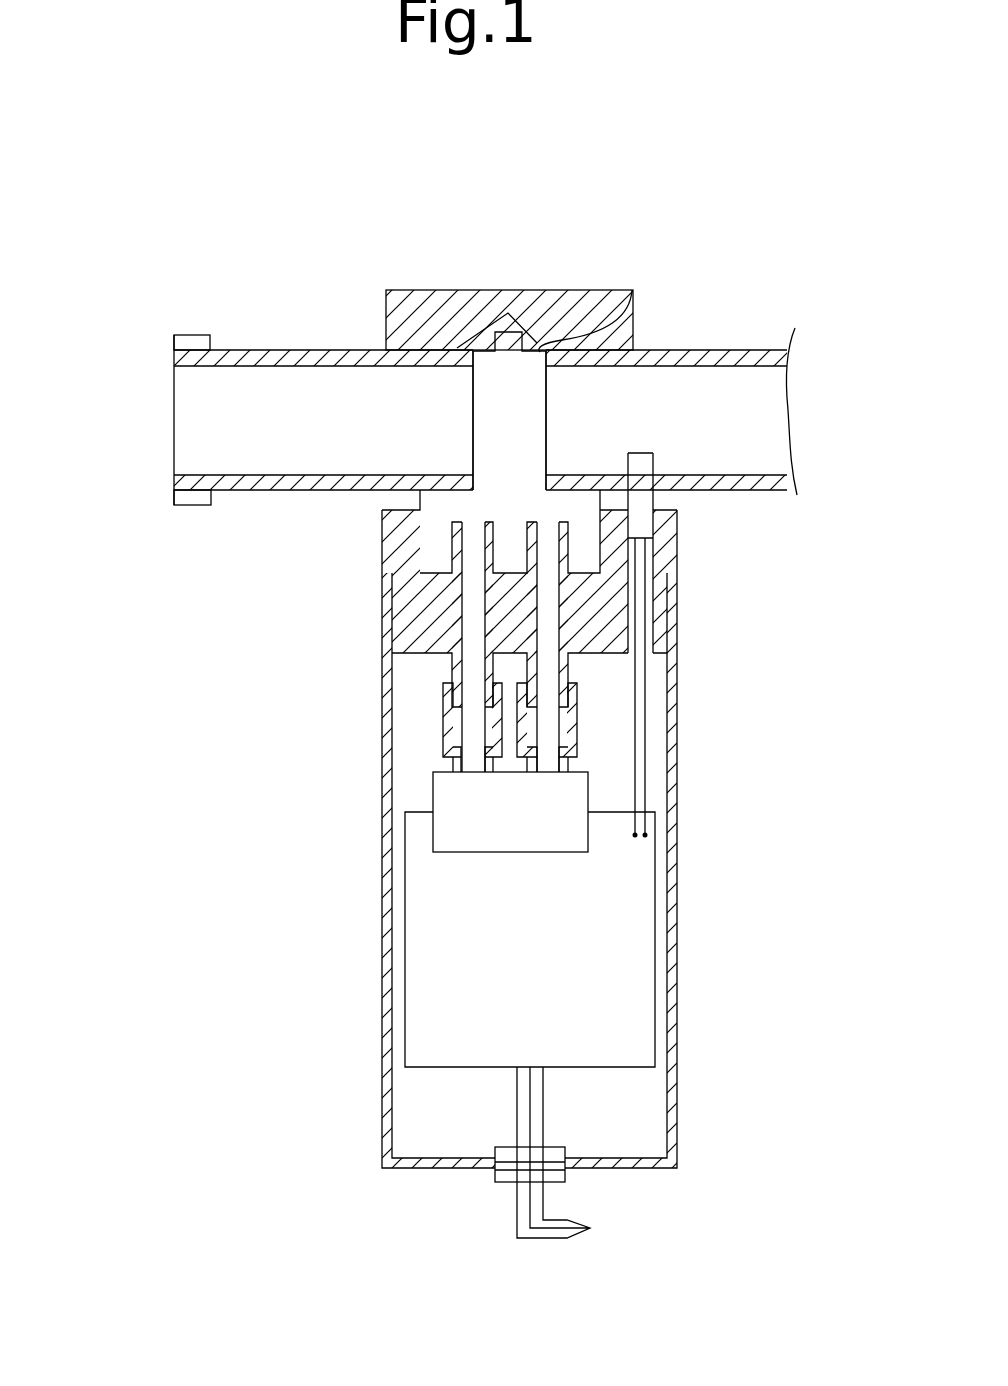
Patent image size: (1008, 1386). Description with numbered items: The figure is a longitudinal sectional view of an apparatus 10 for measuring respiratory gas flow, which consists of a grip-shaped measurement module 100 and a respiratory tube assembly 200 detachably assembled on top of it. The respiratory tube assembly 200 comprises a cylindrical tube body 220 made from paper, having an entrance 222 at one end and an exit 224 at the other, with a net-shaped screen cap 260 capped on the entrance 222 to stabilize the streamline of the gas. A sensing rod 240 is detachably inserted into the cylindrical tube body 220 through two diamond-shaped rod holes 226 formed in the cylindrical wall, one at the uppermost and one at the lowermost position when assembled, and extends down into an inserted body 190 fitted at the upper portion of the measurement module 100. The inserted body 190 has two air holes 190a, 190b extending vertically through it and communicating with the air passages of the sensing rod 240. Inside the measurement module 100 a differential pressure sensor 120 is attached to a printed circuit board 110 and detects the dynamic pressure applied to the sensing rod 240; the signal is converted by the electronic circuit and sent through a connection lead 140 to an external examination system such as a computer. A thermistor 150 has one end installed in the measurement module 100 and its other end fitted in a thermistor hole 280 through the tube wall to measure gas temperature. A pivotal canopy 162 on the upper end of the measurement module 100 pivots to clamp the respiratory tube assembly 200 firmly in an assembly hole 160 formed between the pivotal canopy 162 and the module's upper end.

The apparatus for measuring respiratory gas flow 10 is at (480, 150).
The measurement module 100 is at (732, 828).
The printed circuit board 110 is at (405, 931).
The differential pressure sensor 120 is at (433, 786).
The connection lead 140 is at (517, 1208).
The thermistor 150 is at (640, 523).
The assembly hole 160 is at (295, 516).
The pivotal canopy 162 is at (501, 290).
The inserted body 190 is at (401, 509).
The air hole 190a is at (472, 690).
The air hole 190b is at (546, 690).
The respiratory tube assembly 200 is at (240, 303).
The cylindrical tube body 220 is at (233, 349).
The entrance 222 is at (174, 414).
The exit 224 is at (797, 431).
The rod hole 226 is at (632, 290).
The sensing rod 240 is at (472, 423).
The screen cap 260 is at (188, 505).
The thermistor hole 280 is at (655, 510).